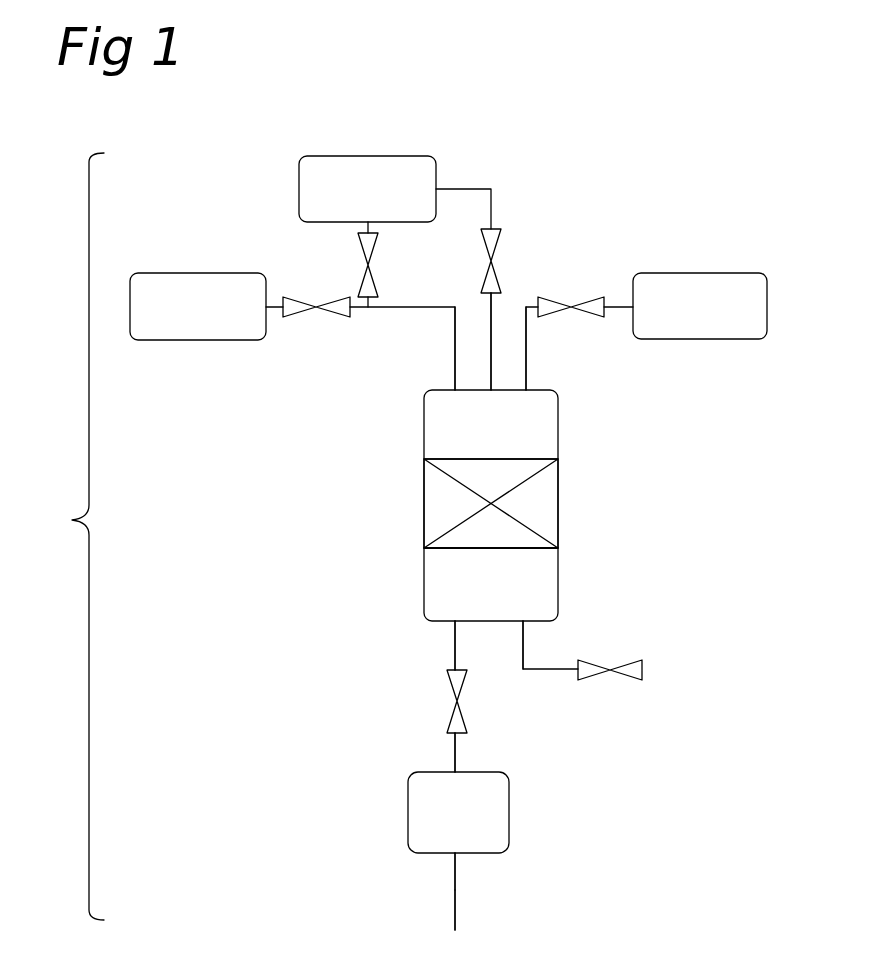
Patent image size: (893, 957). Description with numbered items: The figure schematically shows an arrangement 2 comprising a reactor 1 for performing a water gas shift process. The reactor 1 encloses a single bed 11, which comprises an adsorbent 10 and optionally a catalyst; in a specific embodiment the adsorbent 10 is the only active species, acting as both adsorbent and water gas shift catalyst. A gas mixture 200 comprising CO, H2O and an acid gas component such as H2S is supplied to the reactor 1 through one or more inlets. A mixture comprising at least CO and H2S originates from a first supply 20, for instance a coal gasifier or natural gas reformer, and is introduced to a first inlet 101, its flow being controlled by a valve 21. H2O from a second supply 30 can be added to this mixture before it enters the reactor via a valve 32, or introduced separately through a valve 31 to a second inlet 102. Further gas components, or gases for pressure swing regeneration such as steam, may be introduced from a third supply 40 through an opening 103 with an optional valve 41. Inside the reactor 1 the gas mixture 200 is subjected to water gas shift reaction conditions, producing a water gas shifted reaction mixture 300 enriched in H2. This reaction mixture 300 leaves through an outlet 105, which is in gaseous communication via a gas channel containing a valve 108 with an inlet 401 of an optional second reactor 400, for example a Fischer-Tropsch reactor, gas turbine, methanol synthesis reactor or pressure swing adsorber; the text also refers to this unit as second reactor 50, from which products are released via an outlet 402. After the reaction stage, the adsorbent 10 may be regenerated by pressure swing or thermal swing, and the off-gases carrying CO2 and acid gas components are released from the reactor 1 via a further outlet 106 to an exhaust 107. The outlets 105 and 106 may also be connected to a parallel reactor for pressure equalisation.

The reactor 1 is at (416, 471).
The arrangement 2 is at (77, 536).
The adsorbent 10 is at (456, 510).
The bed 11 is at (481, 555).
The first supply 20 is at (193, 266).
The valve 21 is at (295, 304).
The second supply 30 is at (358, 148).
The valve 31 is at (495, 242).
The valve 32 is at (367, 250).
The third supply 40 is at (672, 266).
The valve 41 is at (593, 306).
The second reactor 50 is at (455, 913).
The first inlet 101 is at (451, 417).
The second inlet 102 is at (500, 430).
The opening 103 is at (526, 390).
The outlet 105 is at (451, 618).
The further outlet 106 is at (523, 621).
The exhaust 107 is at (589, 668).
The valve 108 is at (452, 682).
The gas mixture 200 is at (546, 442).
The water gas shifted reaction mixture 300 is at (525, 569).
The second reactor 400 is at (403, 813).
The inlet 401 is at (458, 787).
The outlet 402 is at (456, 855).